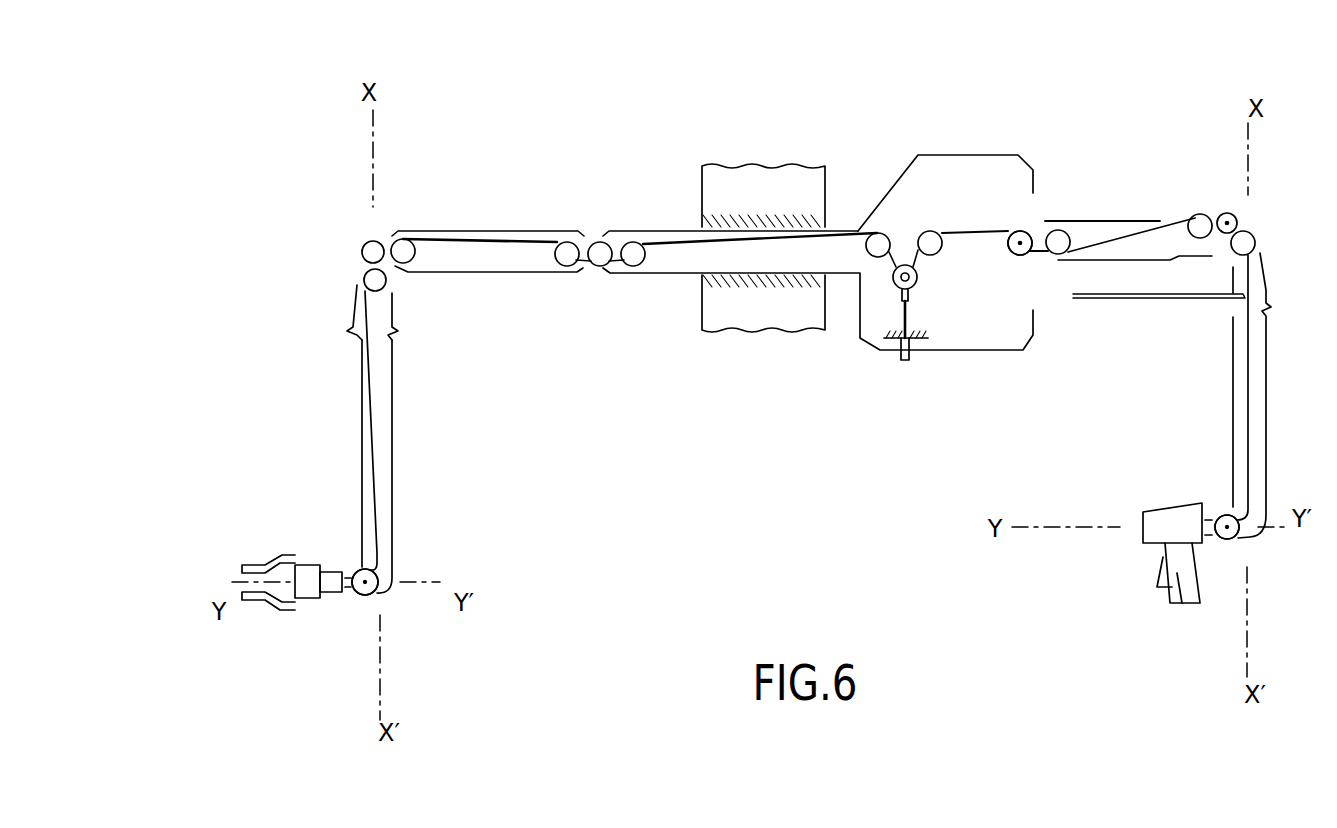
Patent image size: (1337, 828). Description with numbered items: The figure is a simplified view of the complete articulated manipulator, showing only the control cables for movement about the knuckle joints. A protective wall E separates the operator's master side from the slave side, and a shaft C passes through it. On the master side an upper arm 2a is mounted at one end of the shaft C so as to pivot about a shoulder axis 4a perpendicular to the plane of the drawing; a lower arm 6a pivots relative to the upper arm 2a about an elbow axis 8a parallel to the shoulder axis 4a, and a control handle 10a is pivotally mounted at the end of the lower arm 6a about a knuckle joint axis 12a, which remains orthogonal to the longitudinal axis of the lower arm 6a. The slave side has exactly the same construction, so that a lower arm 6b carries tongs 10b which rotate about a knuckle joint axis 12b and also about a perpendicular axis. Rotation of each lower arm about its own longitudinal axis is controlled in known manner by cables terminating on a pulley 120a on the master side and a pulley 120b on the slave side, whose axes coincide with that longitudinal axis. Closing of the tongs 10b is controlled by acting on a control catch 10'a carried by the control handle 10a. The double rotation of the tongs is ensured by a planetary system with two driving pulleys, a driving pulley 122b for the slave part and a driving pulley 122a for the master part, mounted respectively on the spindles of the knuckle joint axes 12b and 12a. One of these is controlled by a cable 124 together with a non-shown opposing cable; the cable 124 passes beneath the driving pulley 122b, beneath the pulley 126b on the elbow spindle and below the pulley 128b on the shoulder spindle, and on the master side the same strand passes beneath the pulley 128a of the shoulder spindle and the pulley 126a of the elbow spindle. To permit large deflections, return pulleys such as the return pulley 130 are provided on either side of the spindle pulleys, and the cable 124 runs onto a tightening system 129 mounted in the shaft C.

The shaft C is at (846, 222).
The protective wall E is at (747, 317).
The pulley 126b is at (362, 248).
The return pulley 130 is at (405, 244).
The pulley 128b is at (598, 242).
The tightening system 129 is at (918, 282).
The shoulder axis 4a is at (1018, 240).
The pulley 128a is at (1030, 233).
The upper arm 2a is at (1118, 220).
The pulley 126a is at (1219, 217).
The elbow axis 8a is at (1243, 222).
The lower arm 6a is at (1265, 413).
The pulley 120a is at (1222, 312).
The driving pulley 122a is at (1222, 515).
The knuckle joint axis 12a is at (1237, 537).
The control handle 10a is at (1182, 607).
The control catch 10'a is at (1120, 591).
The pulley 120b is at (403, 335).
The lower arm 6b is at (392, 457).
The cable 124 is at (378, 532).
The driving pulley 122b is at (355, 572).
The knuckle joint axis 12b is at (366, 582).
The tongs 10b is at (307, 590).